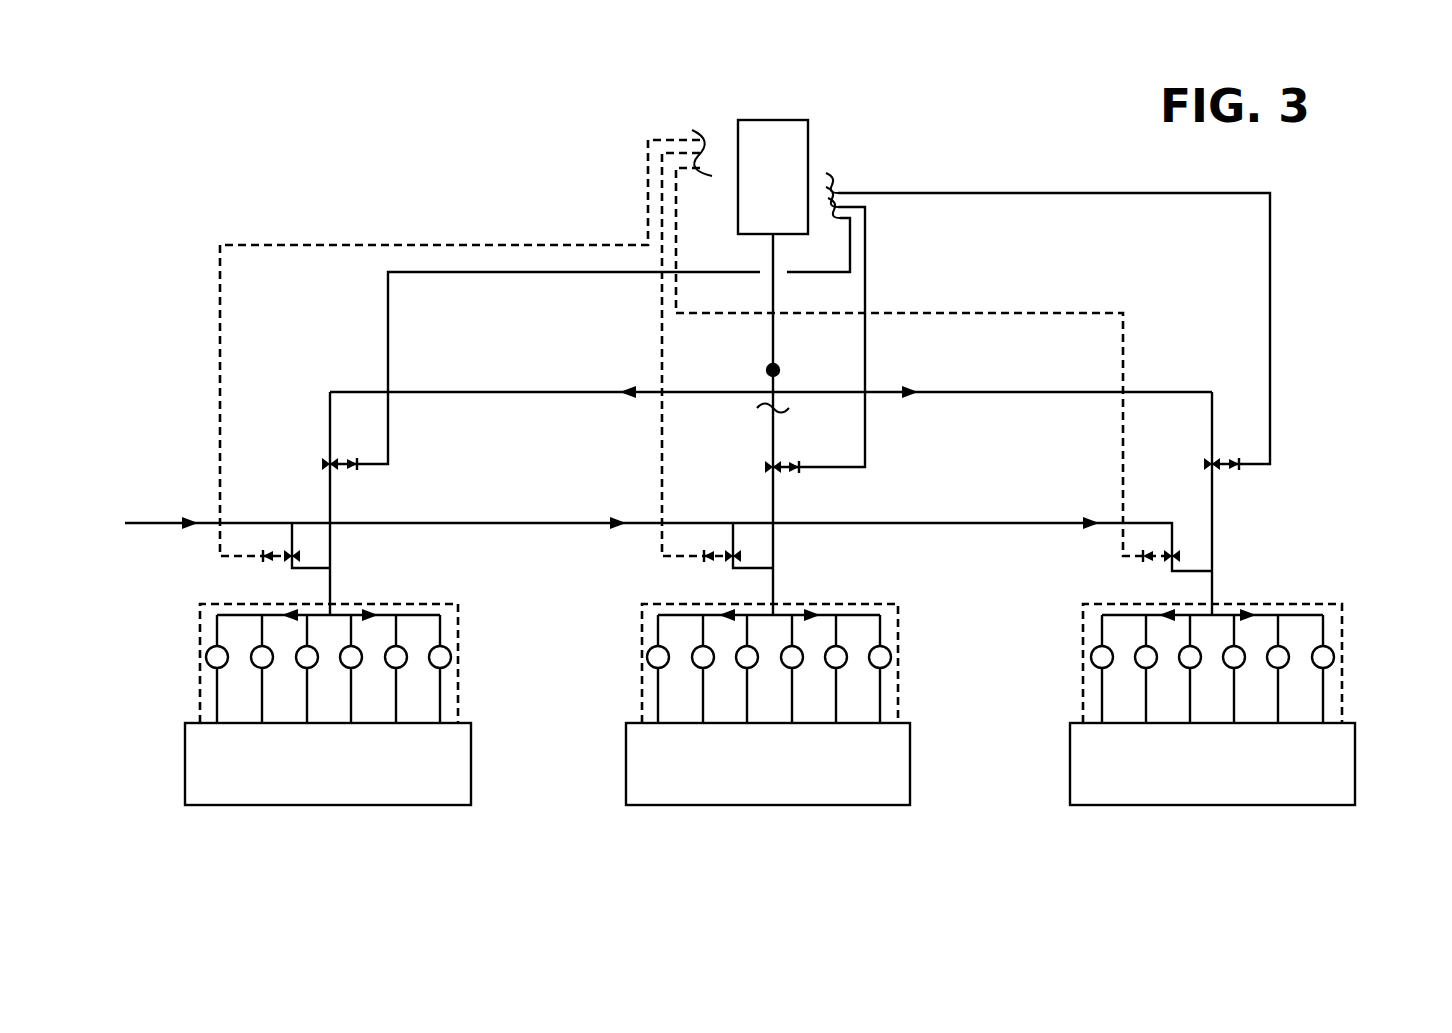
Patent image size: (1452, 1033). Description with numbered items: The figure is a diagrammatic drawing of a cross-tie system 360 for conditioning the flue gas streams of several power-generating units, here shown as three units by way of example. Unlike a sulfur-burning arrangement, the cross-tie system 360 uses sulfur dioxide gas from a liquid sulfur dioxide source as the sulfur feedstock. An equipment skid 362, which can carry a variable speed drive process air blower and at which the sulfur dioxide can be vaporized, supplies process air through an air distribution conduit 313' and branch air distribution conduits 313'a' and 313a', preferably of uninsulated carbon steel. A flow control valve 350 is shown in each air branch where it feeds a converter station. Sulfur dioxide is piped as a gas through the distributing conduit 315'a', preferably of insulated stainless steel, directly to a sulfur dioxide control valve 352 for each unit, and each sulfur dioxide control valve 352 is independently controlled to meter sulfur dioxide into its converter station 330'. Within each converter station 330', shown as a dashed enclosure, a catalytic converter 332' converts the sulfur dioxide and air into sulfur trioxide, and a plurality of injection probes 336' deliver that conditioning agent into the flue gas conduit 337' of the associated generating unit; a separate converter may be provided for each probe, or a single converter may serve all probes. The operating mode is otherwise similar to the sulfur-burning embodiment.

The cross-tie system 360 is at (448, 180).
The equipment skid 362 is at (838, 160).
The air distribution conduit 313' is at (771, 424).
The air distribution conduit 313'a' is at (406, 472).
The air distribution conduit 313a' is at (992, 472).
The distributing conduit 315'a' is at (626, 494).
The flow control valve 350 is at (316, 462).
The sulfur dioxide control valve 352 is at (288, 560).
The converter station 330' is at (820, 657).
The catalytic converter 332' is at (770, 646).
The injection probe 336' is at (770, 669).
The flue gas conduit 337' is at (770, 801).